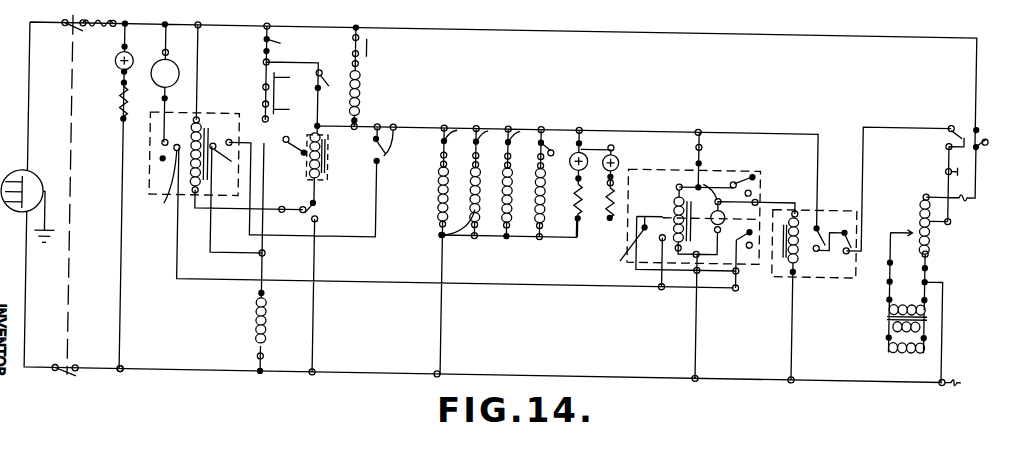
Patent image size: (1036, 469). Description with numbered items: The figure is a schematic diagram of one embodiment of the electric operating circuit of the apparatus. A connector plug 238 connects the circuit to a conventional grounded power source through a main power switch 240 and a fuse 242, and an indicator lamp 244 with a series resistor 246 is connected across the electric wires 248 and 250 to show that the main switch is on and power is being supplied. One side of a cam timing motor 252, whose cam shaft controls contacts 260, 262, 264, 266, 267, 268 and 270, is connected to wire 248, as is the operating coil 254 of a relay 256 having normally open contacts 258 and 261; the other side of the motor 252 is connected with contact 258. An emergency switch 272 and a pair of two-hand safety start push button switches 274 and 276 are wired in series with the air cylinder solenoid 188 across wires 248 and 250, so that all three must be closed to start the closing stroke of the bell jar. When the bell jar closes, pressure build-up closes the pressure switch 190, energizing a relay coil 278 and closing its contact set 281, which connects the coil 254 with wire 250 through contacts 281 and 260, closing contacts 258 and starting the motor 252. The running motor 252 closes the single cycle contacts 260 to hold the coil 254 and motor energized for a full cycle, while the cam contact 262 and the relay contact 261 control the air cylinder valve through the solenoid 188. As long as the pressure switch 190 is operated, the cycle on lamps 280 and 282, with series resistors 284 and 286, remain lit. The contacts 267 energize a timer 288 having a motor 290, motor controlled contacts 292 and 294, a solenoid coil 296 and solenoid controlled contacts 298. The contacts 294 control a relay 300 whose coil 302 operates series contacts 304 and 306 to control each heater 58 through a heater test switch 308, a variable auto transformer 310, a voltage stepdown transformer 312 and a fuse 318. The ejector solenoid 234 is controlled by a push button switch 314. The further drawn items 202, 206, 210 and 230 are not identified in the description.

The heater 58 is at (905, 347).
The air cylinder solenoid 188 is at (258, 337).
The pressure switch 190 is at (336, 71).
The common junction 202 is at (441, 234).
The solenoid coil 206 is at (502, 224).
The solenoid coil 210 is at (540, 211).
The solenoid coil 230 is at (438, 198).
The ejector solenoid 234 is at (360, 103).
The connector plug 238 is at (28, 176).
The main power switch 240 is at (72, 184).
The fuse 242 is at (98, 27).
The indicator lamp 244 is at (115, 65).
The series resistor 246 is at (118, 107).
The electric wire 248 is at (152, 29).
The electric wire 250 is at (125, 372).
The cam timing motor 252 is at (168, 56).
The operating coil 254 is at (198, 130).
The relay 256 is at (233, 117).
The normally open contact 258 is at (160, 182).
The single cycle contacts 260 is at (319, 211).
The relay contact 261 is at (228, 184).
The cam shaft contact 262 is at (394, 135).
The cam-controlled contact 264 is at (447, 140).
The cam-controlled contact 266 is at (479, 155).
The cam-controlled contacts 267 is at (701, 151).
The cam-controlled contact 268 is at (517, 128).
The cam-controlled contact 270 is at (543, 153).
The emergency switch 272 is at (287, 39).
The two-hand safety start push button switch 274 is at (277, 103).
The two-hand safety start push button switch 276 is at (287, 93).
The relay coil 278 is at (327, 171).
The cycle on lamp 280 is at (584, 153).
The contact set 281 is at (307, 141).
The cycle on lamp 282 is at (616, 157).
The series resistor 284 is at (575, 198).
The series resistor 286 is at (607, 200).
The timer 288 is at (752, 162).
The timer motor 290 is at (718, 200).
The motor controlled contacts 292 is at (750, 244).
The motor controlled contacts 294 is at (756, 180).
The solenoid coil 296 is at (675, 207).
The solenoid controlled contacts 298 is at (623, 246).
The relay 300 is at (826, 204).
The relay coil 302 is at (795, 272).
The series contact 304 is at (829, 254).
The series contact 306 is at (853, 232).
The heater test switch 308 is at (979, 123).
The variable auto transformer 310 is at (931, 230).
The voltage stepdown transformer 312 is at (913, 300).
The push button switch 314 is at (368, 50).
The fuse 318 is at (890, 268).